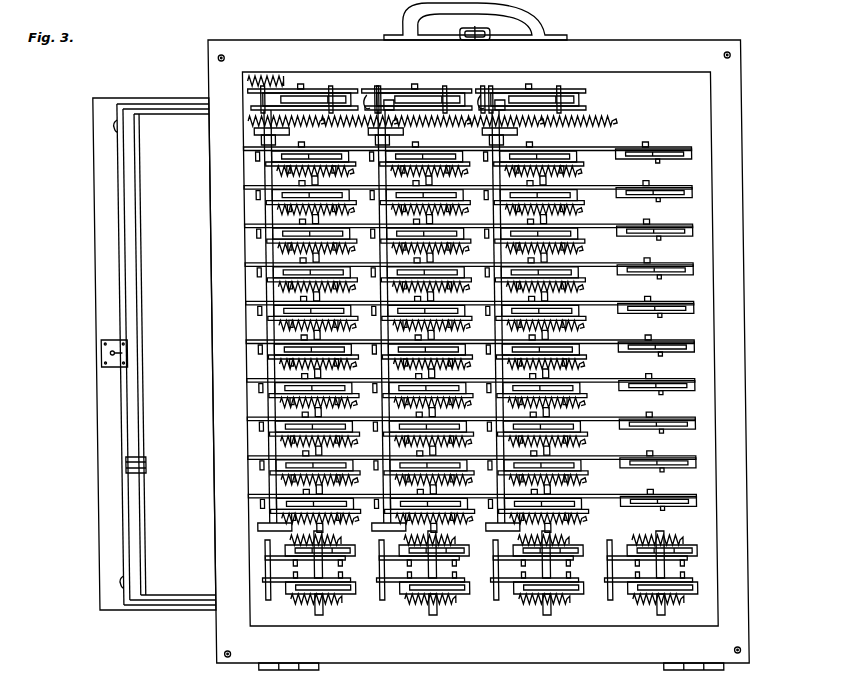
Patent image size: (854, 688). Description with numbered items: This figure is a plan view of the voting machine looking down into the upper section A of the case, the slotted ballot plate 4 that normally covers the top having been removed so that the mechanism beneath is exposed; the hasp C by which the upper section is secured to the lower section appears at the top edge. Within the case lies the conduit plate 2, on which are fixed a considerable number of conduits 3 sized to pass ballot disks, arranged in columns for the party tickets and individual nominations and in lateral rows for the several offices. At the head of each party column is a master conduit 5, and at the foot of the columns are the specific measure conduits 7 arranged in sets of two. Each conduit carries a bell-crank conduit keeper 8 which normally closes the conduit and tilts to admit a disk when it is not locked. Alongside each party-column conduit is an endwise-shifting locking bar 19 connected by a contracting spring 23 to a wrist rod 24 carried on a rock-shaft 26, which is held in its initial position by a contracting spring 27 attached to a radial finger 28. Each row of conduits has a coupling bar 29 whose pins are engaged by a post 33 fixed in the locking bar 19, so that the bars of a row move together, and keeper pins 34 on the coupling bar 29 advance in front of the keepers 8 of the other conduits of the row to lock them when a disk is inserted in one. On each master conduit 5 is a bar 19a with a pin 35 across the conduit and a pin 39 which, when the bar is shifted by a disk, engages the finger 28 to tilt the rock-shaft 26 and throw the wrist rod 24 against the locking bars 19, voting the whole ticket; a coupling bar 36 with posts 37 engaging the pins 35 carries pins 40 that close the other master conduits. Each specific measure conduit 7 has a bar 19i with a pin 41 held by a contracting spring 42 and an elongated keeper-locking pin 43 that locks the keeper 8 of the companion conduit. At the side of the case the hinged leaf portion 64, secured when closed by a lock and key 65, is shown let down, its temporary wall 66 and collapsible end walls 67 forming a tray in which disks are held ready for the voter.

The upper section of the case A is at (744, 288).
The conduit plate 2 is at (706, 573).
The conduits 3 is at (568, 150).
The ballot plate 4 is at (92, 414).
The master conduit 5 is at (491, 675).
The specific measure conduits 7 is at (338, 282).
The conduit keeper 8 is at (398, 152).
The locking bar 19 is at (345, 165).
The master conduit bar 19a is at (575, 100).
The specific measure conduit bar 19i is at (448, 573).
The contracting spring 23 is at (575, 206).
The wrist rod 24 is at (289, 490).
The rock-shaft 26 is at (284, 414).
The contracting spring 27 is at (316, 121).
The radial finger 28 is at (387, 100).
The coupling bar 29 is at (455, 440).
The post 33 is at (572, 250).
The keeper pins 34 is at (346, 248).
The pin 35 is at (438, 90).
The coupling bar 36 is at (268, 80).
The posts 37 is at (331, 92).
The pin 39 is at (366, 97).
The pins 40 is at (378, 88).
The pin 41 is at (450, 586).
The contracting spring 42 is at (323, 538).
The keeper-locking pin 43 is at (256, 568).
The leaf portion of the side wall 64 is at (154, 354).
The lock and key 65 is at (106, 368).
The temporary wall 66 is at (127, 440).
The collapsible end walls 67 is at (157, 110).
The hasp C is at (492, 38).